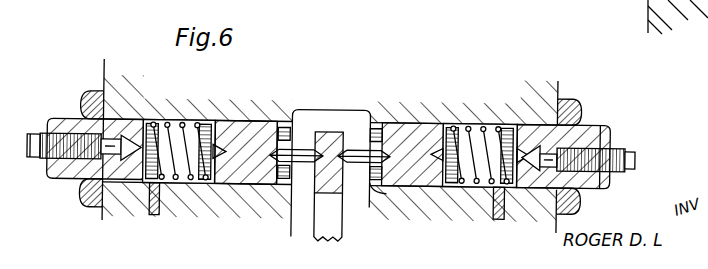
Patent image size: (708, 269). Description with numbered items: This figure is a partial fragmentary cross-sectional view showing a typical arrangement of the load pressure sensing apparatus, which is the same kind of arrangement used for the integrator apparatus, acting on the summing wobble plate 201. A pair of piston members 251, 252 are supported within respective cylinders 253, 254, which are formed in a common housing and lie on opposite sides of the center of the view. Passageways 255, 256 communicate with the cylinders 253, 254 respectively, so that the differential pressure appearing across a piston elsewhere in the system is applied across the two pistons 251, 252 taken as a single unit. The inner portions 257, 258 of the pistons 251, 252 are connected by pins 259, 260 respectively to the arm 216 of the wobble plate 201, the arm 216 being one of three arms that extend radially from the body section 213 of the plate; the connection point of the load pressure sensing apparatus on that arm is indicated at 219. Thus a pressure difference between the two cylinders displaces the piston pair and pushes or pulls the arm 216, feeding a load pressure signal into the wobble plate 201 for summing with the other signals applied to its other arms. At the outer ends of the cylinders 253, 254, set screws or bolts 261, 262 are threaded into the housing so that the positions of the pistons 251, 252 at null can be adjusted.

The wobble plate 201 is at (307, 224).
The body section 213 is at (348, 212).
The arm 216 is at (328, 135).
The connection of load pressure sensing apparatus 219 is at (486, 102).
The piston member 251 is at (245, 132).
The piston member 252 is at (411, 122).
The cylinder 253 is at (192, 122).
The cylinder 254 is at (447, 122).
The passageway 255 is at (152, 216).
The passageway 256 is at (500, 220).
The inner portion of piston 257 is at (278, 186).
The inner portion of piston 258 is at (387, 193).
The pin 259 is at (290, 142).
The pin 260 is at (360, 142).
The set screw 261 is at (38, 137).
The set screw 262 is at (613, 146).